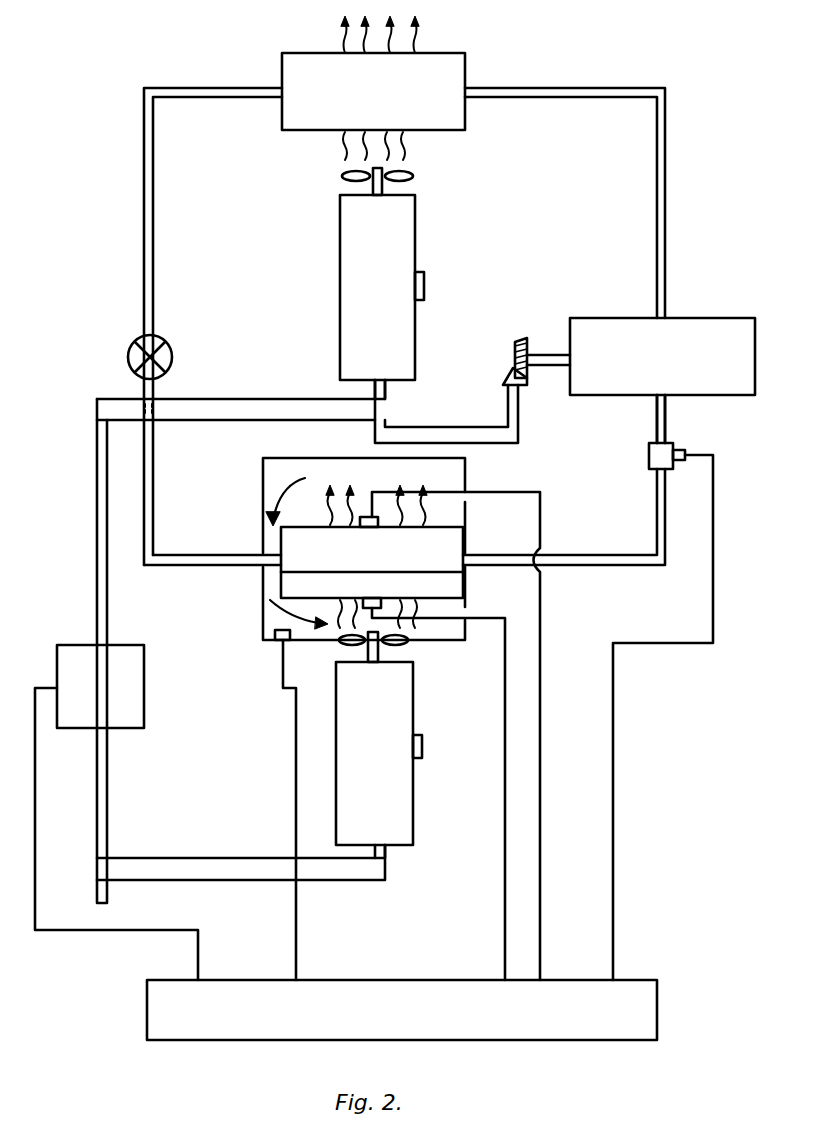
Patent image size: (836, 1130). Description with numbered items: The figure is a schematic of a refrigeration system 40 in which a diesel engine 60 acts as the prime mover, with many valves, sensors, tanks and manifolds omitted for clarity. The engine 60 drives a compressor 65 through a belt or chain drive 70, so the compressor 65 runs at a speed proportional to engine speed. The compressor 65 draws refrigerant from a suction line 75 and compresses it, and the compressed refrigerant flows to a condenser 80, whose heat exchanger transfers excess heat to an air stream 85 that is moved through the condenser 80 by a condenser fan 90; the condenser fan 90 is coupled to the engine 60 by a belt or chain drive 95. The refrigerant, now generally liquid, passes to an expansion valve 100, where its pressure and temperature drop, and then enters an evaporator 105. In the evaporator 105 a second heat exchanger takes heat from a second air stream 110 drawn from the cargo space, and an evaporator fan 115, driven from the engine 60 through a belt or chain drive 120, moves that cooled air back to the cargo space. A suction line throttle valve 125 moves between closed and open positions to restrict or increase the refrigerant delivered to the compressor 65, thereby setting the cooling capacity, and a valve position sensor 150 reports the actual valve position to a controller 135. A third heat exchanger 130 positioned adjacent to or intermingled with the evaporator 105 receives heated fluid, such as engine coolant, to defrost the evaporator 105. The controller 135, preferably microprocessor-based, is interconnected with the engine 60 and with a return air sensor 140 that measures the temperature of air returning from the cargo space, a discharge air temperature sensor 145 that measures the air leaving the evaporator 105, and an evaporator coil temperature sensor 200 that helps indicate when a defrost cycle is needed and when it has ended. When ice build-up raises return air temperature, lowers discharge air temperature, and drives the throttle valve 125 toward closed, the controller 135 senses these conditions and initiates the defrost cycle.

The refrigeration system 40 is at (668, 86).
The diesel engine 60 is at (128, 689).
The compressor 65 is at (733, 318).
The belt or chain drive 70 is at (472, 430).
The suction line 75 is at (655, 413).
The condenser 80 is at (445, 113).
The air stream 85 is at (338, 38).
The condenser fan 90 is at (385, 243).
The belt or chain drive 95 is at (282, 384).
The expansion valve 100 is at (158, 348).
The evaporator 105 is at (458, 533).
The second air stream 110 is at (318, 482).
The evaporator fan 115 is at (405, 693).
The belt or chain drive 120 is at (230, 858).
The suction line throttle valve 125 is at (650, 462).
The third heat exchanger 130 is at (340, 593).
The controller 135 is at (628, 980).
The return air sensor 140 is at (278, 632).
The discharge air temperature sensor 145 is at (362, 522).
The valve position sensor 150 is at (685, 452).
The evaporator coil temperature sensor 200 is at (372, 598).